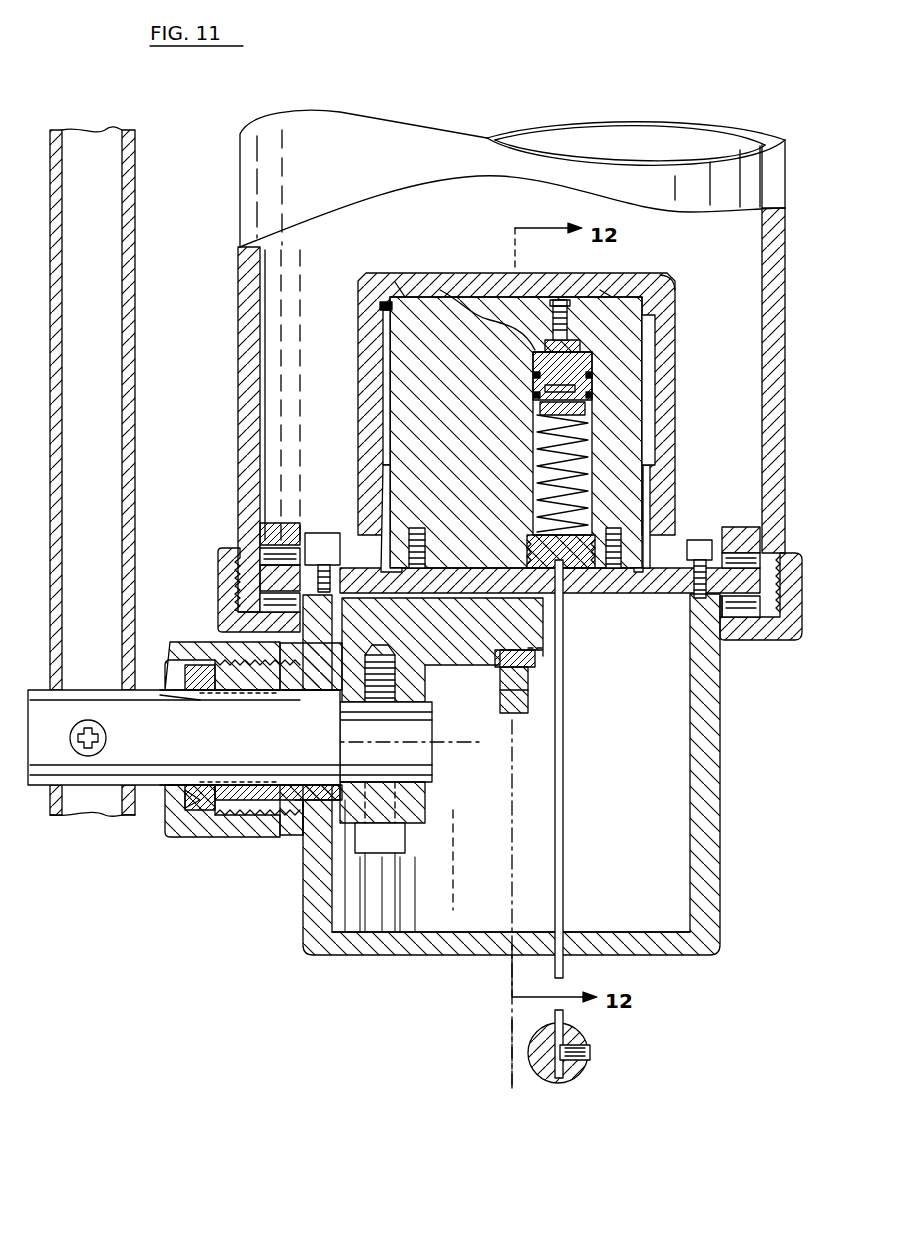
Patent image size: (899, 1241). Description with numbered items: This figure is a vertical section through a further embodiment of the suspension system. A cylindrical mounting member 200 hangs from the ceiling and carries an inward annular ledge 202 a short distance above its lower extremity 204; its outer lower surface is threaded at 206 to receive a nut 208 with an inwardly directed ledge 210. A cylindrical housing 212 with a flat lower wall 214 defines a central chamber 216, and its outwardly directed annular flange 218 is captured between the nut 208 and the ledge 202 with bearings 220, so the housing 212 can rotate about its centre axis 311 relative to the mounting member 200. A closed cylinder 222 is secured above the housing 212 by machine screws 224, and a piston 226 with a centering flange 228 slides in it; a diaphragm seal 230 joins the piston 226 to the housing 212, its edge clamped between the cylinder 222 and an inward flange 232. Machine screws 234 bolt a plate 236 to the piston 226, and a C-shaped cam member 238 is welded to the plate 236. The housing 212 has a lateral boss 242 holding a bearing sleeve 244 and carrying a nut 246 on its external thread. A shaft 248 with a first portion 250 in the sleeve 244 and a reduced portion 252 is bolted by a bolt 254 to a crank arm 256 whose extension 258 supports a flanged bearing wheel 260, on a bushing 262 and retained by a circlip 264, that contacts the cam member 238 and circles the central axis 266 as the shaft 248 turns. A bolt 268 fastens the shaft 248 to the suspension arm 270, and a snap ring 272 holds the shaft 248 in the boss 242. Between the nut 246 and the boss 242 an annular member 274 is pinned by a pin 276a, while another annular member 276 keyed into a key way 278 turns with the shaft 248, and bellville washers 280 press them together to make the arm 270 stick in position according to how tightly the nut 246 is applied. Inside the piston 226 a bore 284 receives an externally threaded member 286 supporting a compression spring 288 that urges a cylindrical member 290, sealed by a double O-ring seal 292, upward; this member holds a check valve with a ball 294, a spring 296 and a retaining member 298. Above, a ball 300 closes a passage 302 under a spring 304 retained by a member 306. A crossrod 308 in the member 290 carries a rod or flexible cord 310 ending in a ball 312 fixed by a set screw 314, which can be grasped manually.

The cylindrical mounting member 200 is at (240, 258).
The inward annular ledge 202 is at (780, 472).
The lower extremity 204 is at (768, 653).
The thread 206 is at (778, 644).
The nut 208 is at (757, 648).
The inwardly directed ledge 210 is at (745, 646).
The cylindrical housing 212 is at (712, 820).
The flat lower wall 214 is at (462, 958).
The central chamber 216 is at (503, 843).
The outwardly directed annular flange 218 is at (738, 530).
The bearings 220 is at (232, 556).
The closed cylinder 222 is at (362, 328).
The machine screws 224 is at (323, 545).
The piston 226 is at (652, 390).
The flange 228 is at (382, 304).
The diaphragm seal 230 is at (392, 402).
The inward flange 232 is at (665, 592).
The machine screws 234 is at (384, 472).
The plate 236 is at (578, 610).
The cam member 238 is at (512, 700).
The lateral boss 242 is at (290, 792).
The bearing sleeve 244 is at (268, 795).
The nut 246 is at (183, 818).
The shaft 248 is at (100, 788).
The first portion 250 is at (300, 838).
The reduced portion 252 is at (420, 757).
The bolt 254 is at (392, 838).
The crank arm 256 is at (413, 802).
The extension 258 is at (457, 648).
The bearing wheel 260 is at (520, 692).
The bushing 262 is at (532, 668).
The circlip 264 is at (545, 652).
The central axis 266 is at (308, 752).
The bolt 268 is at (88, 720).
The suspension arm 270 is at (135, 302).
The snap ring 272 is at (213, 692).
The annular member 274 is at (222, 645).
The annular member 276 is at (200, 665).
The pin 276a is at (212, 812).
The key way 278 is at (165, 702).
The bellville washers 280 is at (180, 792).
The bore 284 is at (395, 284).
The externally threaded member 286 is at (578, 595).
The compression spring 288 is at (592, 448).
The cylindrical member 290 is at (650, 330).
The double O-ring seal 292 is at (596, 377).
The ball 294 is at (608, 292).
The spring 296 is at (658, 283).
The member 298 is at (442, 292).
The ball 300 is at (598, 340).
The passage 302 is at (558, 300).
The spring 304 is at (510, 300).
The member 306 is at (480, 300).
The crossrod 308 is at (616, 398).
The rod or flexible cord 310 is at (565, 830).
The centre axis 311 is at (510, 1055).
The ball 312 is at (588, 1066).
The set screw 314 is at (588, 1048).